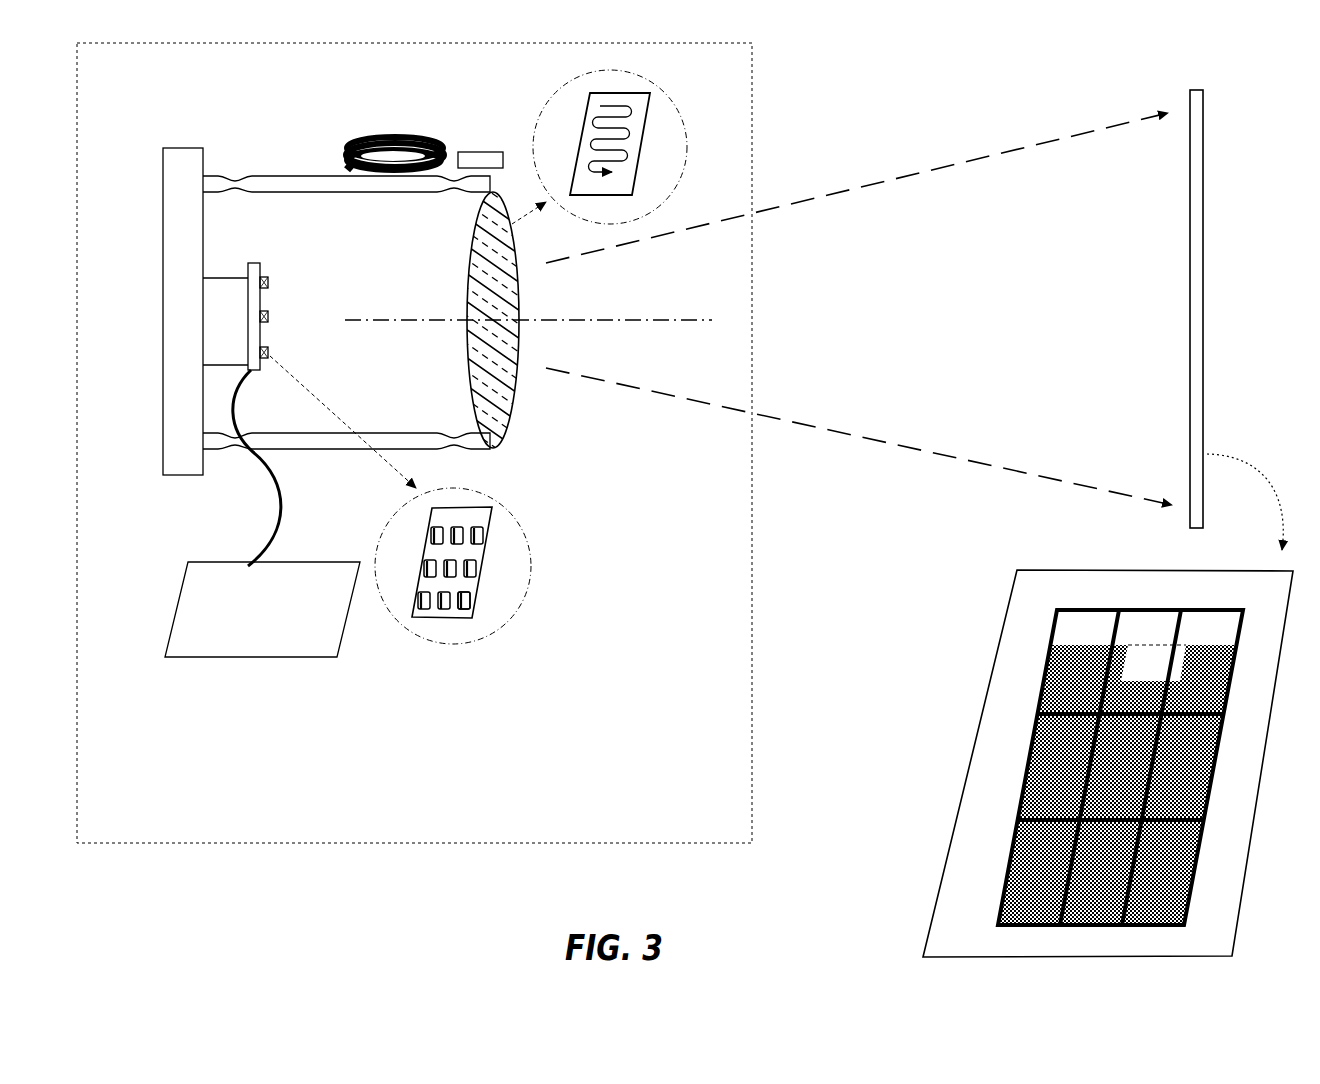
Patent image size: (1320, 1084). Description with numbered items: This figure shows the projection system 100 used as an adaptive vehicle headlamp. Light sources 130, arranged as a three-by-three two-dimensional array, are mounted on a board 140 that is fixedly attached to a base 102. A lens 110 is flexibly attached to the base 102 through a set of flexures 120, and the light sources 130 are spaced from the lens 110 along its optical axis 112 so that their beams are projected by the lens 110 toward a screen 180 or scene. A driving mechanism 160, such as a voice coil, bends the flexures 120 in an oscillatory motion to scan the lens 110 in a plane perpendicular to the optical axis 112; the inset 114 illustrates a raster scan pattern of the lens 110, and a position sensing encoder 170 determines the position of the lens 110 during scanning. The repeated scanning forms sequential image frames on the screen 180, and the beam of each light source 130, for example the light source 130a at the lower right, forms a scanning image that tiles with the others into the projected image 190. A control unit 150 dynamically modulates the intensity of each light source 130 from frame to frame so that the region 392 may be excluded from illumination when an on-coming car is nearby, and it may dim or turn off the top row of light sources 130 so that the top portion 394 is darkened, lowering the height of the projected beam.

The projection system 100 is at (752, 582).
The base 102 is at (188, 247).
The lens 110 is at (472, 240).
The optical axis 112 is at (588, 318).
The inset 114 is at (680, 108).
The set of flexures 120 is at (295, 188).
The light sources 130 is at (268, 281).
The light source 130a is at (466, 602).
The board 140 is at (260, 268).
The control unit 150 is at (263, 637).
The driving mechanism 160 is at (392, 133).
The position sensing encoder 170 is at (487, 152).
The screen 180 is at (1193, 258).
The projected image 190 is at (1045, 650).
The region 392 is at (1158, 660).
The top portion 394 is at (1070, 625).